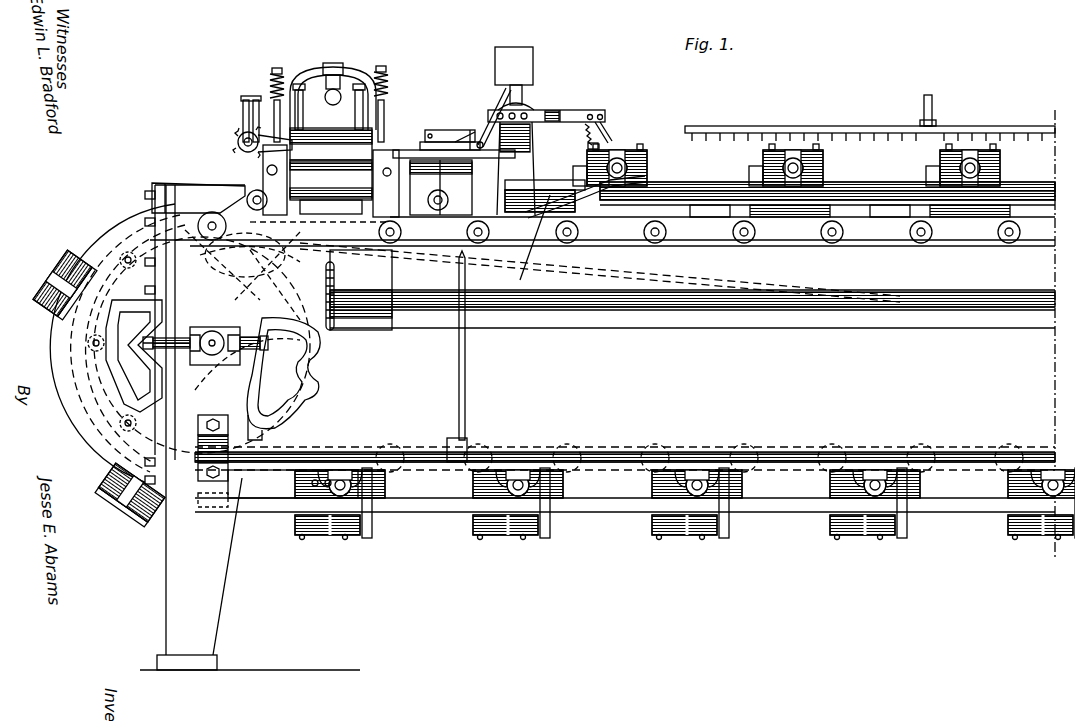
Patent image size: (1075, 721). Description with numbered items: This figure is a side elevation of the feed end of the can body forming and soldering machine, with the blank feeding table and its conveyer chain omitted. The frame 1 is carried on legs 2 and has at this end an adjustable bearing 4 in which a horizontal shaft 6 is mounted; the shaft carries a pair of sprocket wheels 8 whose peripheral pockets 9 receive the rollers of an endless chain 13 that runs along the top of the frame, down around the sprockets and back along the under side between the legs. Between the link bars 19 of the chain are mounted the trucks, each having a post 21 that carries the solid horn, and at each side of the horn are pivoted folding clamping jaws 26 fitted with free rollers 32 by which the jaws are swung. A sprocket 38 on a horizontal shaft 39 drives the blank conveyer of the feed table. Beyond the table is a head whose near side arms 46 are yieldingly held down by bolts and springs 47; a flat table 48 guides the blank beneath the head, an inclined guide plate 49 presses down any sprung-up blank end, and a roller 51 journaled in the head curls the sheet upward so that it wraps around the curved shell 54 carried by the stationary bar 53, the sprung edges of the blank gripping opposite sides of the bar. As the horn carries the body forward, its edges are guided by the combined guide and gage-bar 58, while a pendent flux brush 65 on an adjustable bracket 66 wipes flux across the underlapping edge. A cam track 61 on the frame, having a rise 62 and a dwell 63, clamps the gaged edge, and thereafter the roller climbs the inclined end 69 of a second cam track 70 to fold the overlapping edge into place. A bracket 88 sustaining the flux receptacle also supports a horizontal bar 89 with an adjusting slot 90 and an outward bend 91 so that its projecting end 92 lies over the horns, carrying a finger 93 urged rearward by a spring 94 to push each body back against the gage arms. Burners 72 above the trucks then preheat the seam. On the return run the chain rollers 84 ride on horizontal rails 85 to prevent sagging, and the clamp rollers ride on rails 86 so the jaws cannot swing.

The frame 1 is at (492, 343).
The legs 2 is at (333, 62).
The adjustable bearing 4 is at (228, 334).
The shaft 6 is at (213, 352).
The sprocket wheels 8 is at (300, 384).
The peripheral pockets 9 is at (288, 420).
The endless chain 13 is at (888, 240).
The link bars 19 is at (981, 245).
The post 21 is at (562, 520).
The folding clamping jaw 26 is at (95, 258).
The free roller 32 is at (628, 171).
The sprocket 38 is at (342, 328).
The horizontal shaft 39 is at (706, 300).
The arms 46 is at (262, 92).
The bolts and springs 47 is at (276, 74).
The flat table 48 is at (331, 145).
The guide plate 49 is at (346, 102).
The roller 51 is at (458, 142).
The stationary bar 53 is at (394, 140).
The curved shell 54 is at (331, 187).
The combined guide and gage-bar 58 is at (516, 153).
The cam track 61 is at (531, 241).
The rise 62 is at (480, 200).
The dwell 63 is at (548, 192).
The flux brush 65 is at (491, 136).
The adjustable bracket 66 is at (432, 130).
The inclined end 69 is at (578, 212).
The cam track 70 is at (827, 186).
The burners 72 is at (862, 133).
The rollers 84 is at (760, 246).
The horizontal rails 85 is at (602, 457).
The rails 86 is at (632, 505).
The bracket 88 is at (526, 122).
The horizontal bar 89 is at (490, 118).
The adjusting slot 90 is at (532, 112).
The outward bend 91 is at (562, 120).
The projecting end 92 is at (598, 122).
The finger 93 is at (604, 142).
The spring 94 is at (612, 136).